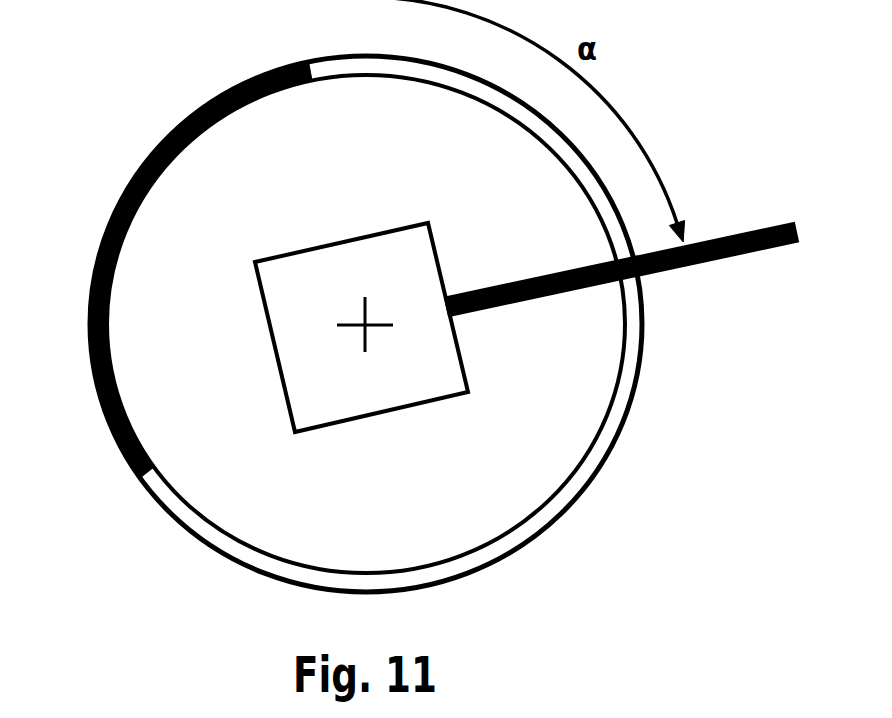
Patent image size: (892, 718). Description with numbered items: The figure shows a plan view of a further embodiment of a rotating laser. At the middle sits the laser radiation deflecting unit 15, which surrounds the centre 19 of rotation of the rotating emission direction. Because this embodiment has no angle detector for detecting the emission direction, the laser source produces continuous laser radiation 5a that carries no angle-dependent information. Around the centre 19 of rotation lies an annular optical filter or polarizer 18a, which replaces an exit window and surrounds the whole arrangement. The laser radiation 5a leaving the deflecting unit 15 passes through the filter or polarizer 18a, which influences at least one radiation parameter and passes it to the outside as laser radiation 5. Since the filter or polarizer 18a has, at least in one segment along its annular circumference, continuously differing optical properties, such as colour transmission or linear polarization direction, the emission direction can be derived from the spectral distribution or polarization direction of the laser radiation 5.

The annular optical filter or polarizer 18a is at (153, 160).
The laser radiation deflecting unit 15 is at (377, 270).
The centre of rotation 19 is at (358, 317).
The laser radiation 5a is at (485, 287).
The laser radiation 5 is at (732, 233).